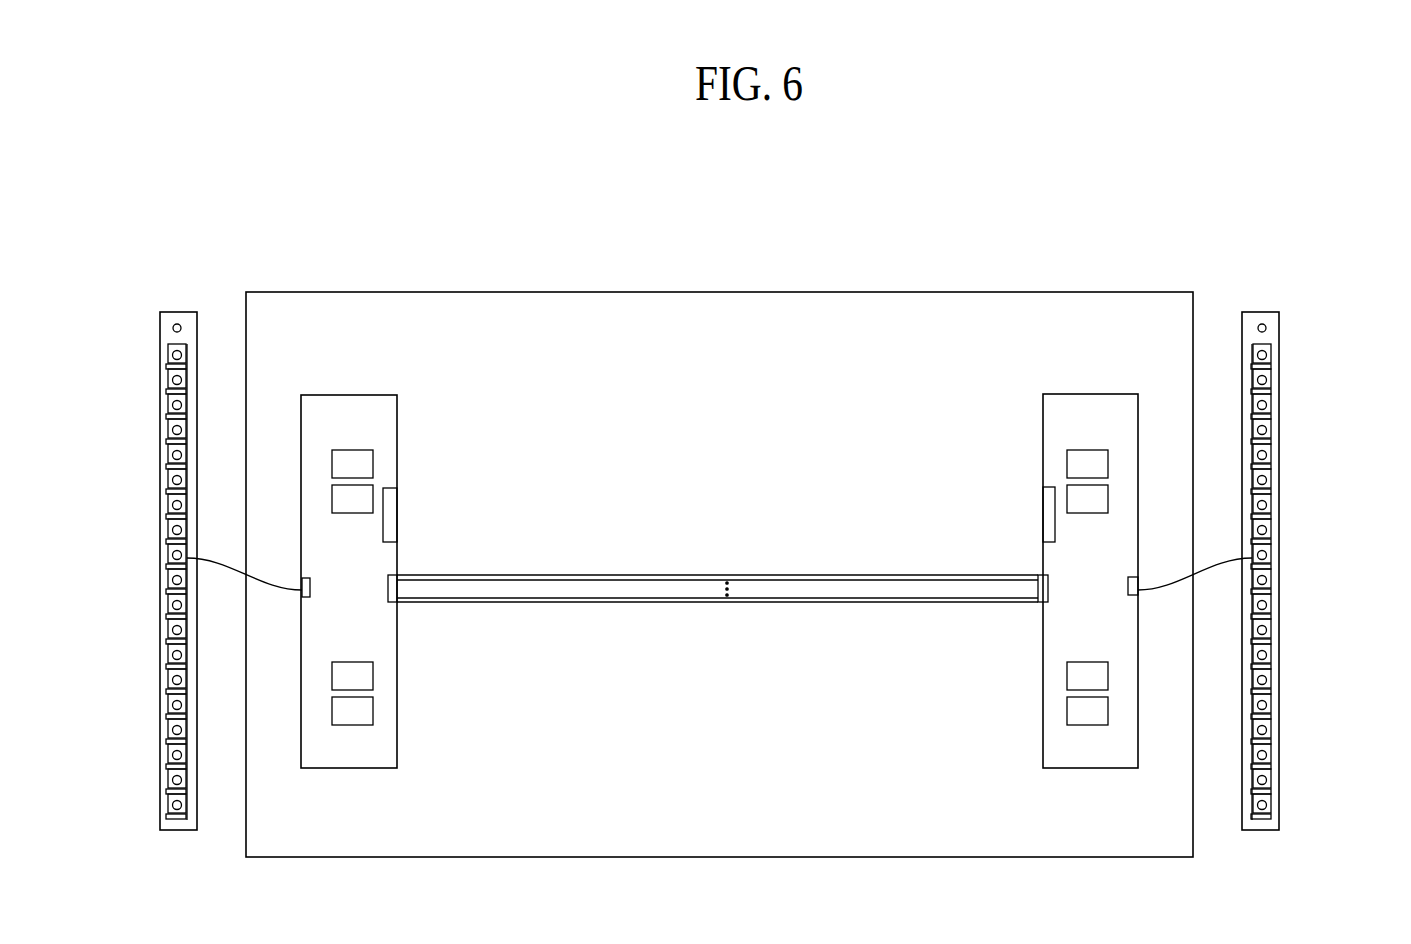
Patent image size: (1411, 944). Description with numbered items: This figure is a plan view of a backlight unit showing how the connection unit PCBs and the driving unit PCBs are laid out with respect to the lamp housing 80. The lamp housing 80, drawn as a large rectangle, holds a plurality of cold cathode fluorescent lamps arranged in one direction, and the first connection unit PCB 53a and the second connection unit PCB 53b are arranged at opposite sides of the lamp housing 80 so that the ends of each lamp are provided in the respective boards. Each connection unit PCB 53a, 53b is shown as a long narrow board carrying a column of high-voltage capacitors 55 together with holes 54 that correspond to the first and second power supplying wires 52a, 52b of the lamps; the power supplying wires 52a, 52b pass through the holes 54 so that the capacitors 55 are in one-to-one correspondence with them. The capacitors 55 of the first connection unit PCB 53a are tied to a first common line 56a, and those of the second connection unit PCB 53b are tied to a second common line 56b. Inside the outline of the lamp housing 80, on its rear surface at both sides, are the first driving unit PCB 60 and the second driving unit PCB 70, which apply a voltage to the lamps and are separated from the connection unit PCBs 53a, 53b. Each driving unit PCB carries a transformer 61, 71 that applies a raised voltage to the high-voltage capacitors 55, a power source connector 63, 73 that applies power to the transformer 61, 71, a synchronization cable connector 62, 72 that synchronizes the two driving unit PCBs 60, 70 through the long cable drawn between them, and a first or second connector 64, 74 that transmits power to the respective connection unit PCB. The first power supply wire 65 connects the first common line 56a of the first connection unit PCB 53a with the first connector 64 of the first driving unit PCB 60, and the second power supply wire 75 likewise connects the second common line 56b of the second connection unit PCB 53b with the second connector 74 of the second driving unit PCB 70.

The lamp housing 80 is at (740, 302).
The first driving unit PCB 60 is at (394, 420).
The transformer 61 is at (363, 711).
The synchronization cable connector 62 is at (393, 593).
The power source connector 63 is at (390, 518).
The first connector 64 is at (302, 592).
The first power supply wire 65 is at (218, 563).
The second driving unit PCB 70 is at (1044, 420).
The transformer 71 is at (1076, 711).
The synchronization cable connector 72 is at (1046, 593).
The power source connector 73 is at (1050, 518).
The second connector 74 is at (1138, 592).
The second power supply wire 75 is at (1221, 563).
The first power supplying wire 52a is at (172, 337).
The second power supplying wire 52b is at (1267, 337).
The first connection unit PCB 53a is at (192, 535).
The second connection unit PCB 53b is at (1238, 540).
The hole 54 is at (177, 323).
The high-voltage capacitor 55 is at (178, 362).
The first common line 56a is at (187, 408).
The second common line 56b is at (1252, 408).